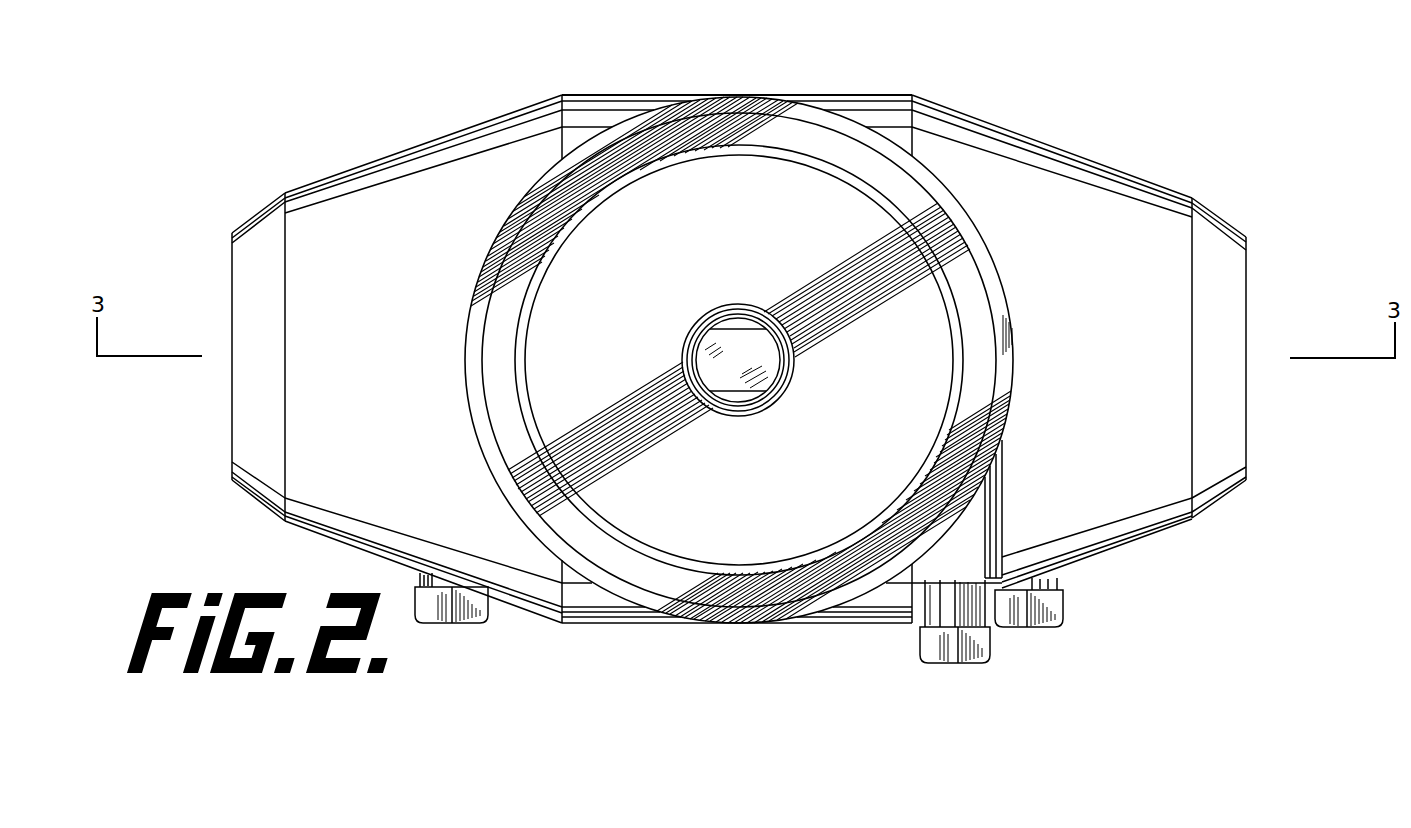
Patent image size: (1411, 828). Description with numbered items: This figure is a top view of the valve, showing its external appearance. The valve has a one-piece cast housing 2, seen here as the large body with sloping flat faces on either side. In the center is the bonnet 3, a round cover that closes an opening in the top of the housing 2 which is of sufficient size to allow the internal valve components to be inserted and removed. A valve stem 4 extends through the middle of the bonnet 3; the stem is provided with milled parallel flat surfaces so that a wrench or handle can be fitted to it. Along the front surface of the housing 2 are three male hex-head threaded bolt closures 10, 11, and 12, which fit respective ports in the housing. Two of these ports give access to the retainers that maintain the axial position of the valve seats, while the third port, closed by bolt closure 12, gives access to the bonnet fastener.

The housing 2 is at (1063, 198).
The bonnet 3 is at (803, 208).
The valve stem 4 is at (722, 352).
The hex-head threaded bolt closure 10 is at (1038, 627).
The hex-head threaded bolt closure 11 is at (470, 622).
The hex-head threaded bolt closure 12 is at (970, 663).